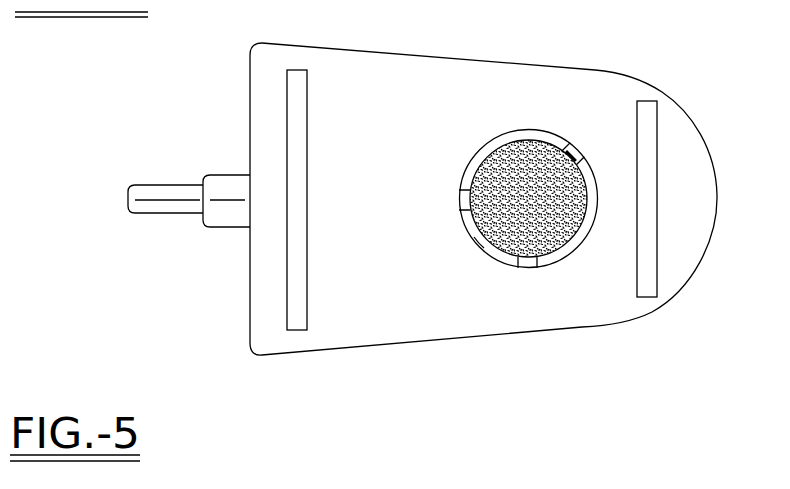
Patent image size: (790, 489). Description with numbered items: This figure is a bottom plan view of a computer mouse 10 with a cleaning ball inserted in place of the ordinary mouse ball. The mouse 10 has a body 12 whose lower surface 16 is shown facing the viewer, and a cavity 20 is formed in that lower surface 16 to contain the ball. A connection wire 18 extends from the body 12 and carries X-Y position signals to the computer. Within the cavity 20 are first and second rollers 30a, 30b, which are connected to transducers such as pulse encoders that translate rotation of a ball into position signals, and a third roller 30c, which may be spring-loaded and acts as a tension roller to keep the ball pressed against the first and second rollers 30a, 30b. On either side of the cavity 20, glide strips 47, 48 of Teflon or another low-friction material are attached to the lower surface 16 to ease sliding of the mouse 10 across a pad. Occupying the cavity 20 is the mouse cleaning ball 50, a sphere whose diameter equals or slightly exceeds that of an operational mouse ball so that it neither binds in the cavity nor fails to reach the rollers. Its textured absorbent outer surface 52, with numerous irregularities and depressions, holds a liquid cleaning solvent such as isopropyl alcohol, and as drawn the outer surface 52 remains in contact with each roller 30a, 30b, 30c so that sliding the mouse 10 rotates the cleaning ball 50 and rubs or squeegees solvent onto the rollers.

The computer mouse 10 is at (211, 121).
The body 12 is at (599, 65).
The lower surface 16 is at (480, 72).
The connection wire 18 is at (143, 210).
The cavity 20 is at (490, 145).
The first roller 30a is at (460, 200).
The second roller 30b is at (531, 268).
The third roller 30c is at (572, 143).
The glide strip 47 is at (287, 293).
The glide strip 48 is at (657, 267).
The mouse cleaning ball 50 is at (470, 230).
The textured absorbent outer surface 52 is at (482, 249).